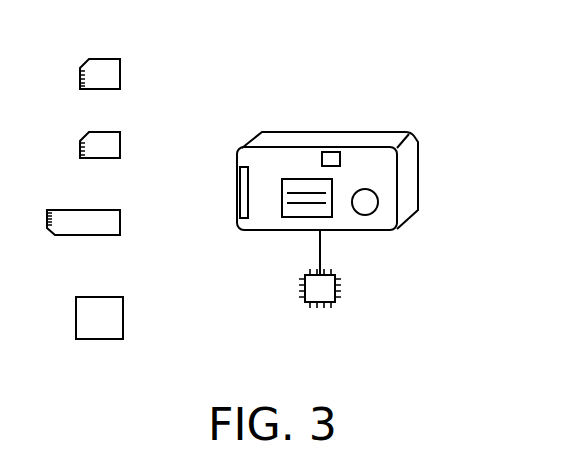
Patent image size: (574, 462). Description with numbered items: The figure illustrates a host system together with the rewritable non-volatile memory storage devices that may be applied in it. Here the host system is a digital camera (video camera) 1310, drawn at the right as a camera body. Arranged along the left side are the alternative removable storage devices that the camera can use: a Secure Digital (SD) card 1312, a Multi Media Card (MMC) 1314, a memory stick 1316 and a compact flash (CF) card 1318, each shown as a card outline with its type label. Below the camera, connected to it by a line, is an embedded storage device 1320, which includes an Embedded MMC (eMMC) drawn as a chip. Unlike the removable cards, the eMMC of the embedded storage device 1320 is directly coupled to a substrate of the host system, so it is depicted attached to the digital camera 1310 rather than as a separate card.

The digital camera 1310 is at (419, 167).
The Secure digital (SD) card 1312 is at (120, 67).
The Multi Media Card (MMC) 1314 is at (120, 140).
The memory stick 1316 is at (120, 222).
The compact flash (CF) card 1318 is at (123, 313).
The embedded storage device 1320 is at (342, 290).